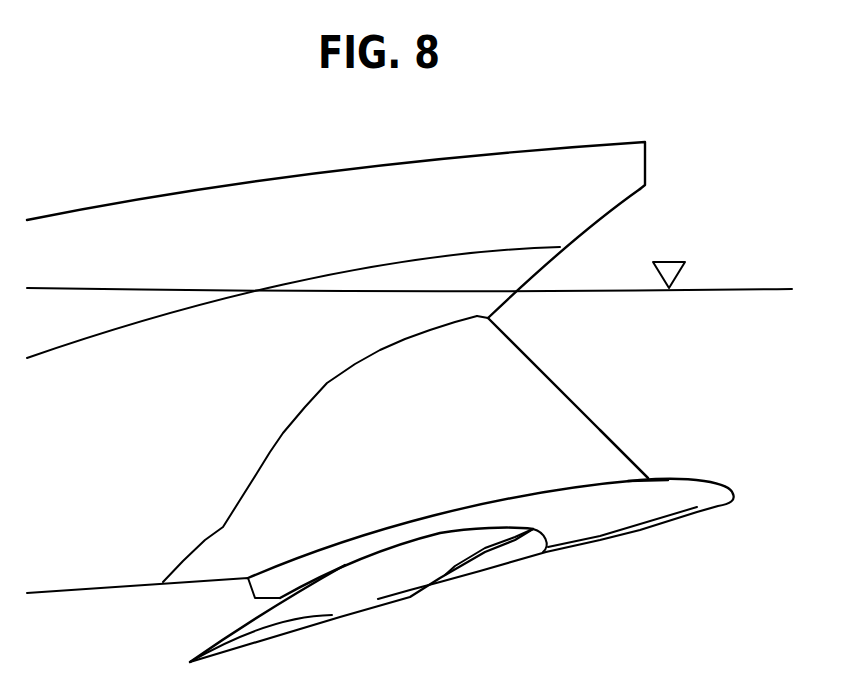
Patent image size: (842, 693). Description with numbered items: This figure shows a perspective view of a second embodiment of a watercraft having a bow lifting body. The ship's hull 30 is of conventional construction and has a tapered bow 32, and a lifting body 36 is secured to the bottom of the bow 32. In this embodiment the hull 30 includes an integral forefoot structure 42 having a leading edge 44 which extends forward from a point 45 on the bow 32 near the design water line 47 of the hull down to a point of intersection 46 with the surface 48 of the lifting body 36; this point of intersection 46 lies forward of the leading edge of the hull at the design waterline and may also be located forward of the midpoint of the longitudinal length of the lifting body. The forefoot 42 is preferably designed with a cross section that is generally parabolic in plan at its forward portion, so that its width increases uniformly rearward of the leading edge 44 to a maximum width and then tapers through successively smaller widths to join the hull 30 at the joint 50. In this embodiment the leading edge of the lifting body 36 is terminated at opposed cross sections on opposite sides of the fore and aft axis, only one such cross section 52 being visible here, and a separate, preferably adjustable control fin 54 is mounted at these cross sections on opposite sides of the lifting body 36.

The ship's hull 30 is at (393, 190).
The bow 32 is at (605, 215).
The lifting body 36 is at (693, 498).
The forefoot structure 42 is at (535, 410).
The leading edge 44 is at (618, 448).
The point on bow 45 is at (492, 319).
The point of intersection 46 is at (650, 477).
The design water line 47 is at (672, 262).
The surface of lifting body 48 is at (490, 528).
The joint 50 is at (295, 410).
The cross section 52 is at (500, 558).
The control fin 54 is at (377, 577).